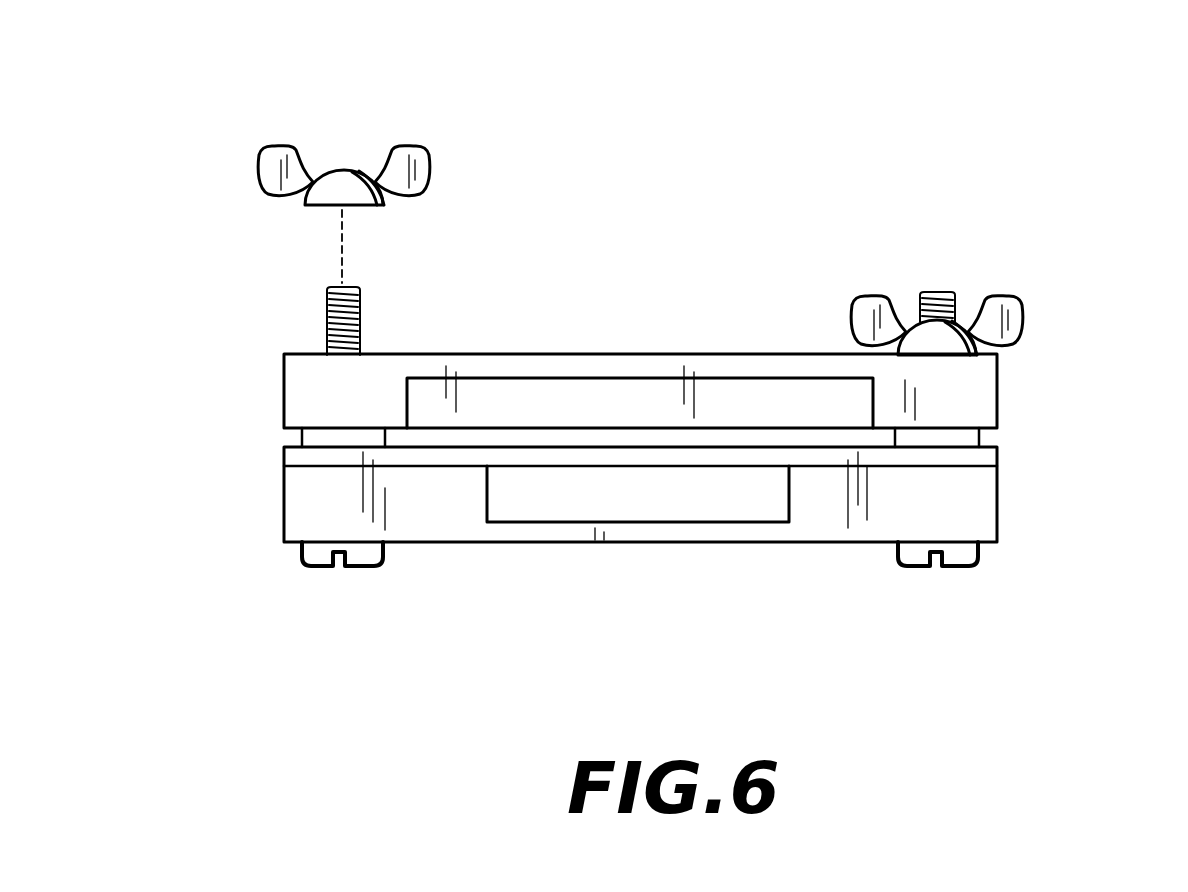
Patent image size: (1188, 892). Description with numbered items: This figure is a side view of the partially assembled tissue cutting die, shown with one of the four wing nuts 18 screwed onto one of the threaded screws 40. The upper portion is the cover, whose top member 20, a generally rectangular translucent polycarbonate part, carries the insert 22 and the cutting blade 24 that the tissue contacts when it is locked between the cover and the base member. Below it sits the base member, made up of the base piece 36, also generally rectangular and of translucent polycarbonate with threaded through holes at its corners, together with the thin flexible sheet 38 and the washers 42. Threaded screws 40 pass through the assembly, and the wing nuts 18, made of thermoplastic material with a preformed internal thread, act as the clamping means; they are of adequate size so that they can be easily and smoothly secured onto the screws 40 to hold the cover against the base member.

The wing nut 18 is at (278, 160).
The top member 20 is at (970, 392).
The insert 22 is at (645, 407).
The cutting blade 24 is at (692, 498).
The base piece 36 is at (973, 513).
The thin flexible sheet 38 is at (977, 460).
The threaded screw 40 is at (320, 552).
The washer 42 is at (973, 443).